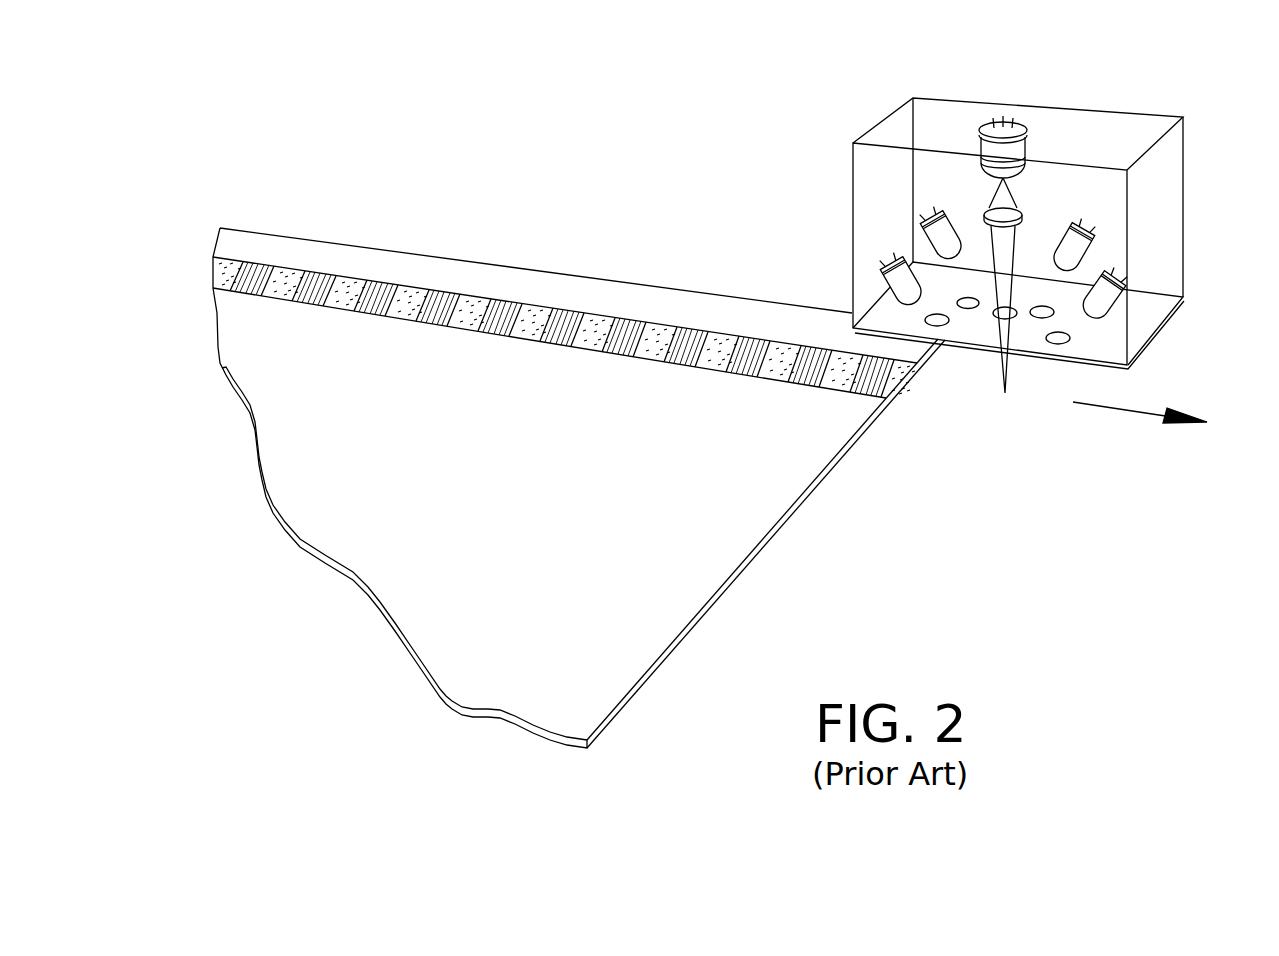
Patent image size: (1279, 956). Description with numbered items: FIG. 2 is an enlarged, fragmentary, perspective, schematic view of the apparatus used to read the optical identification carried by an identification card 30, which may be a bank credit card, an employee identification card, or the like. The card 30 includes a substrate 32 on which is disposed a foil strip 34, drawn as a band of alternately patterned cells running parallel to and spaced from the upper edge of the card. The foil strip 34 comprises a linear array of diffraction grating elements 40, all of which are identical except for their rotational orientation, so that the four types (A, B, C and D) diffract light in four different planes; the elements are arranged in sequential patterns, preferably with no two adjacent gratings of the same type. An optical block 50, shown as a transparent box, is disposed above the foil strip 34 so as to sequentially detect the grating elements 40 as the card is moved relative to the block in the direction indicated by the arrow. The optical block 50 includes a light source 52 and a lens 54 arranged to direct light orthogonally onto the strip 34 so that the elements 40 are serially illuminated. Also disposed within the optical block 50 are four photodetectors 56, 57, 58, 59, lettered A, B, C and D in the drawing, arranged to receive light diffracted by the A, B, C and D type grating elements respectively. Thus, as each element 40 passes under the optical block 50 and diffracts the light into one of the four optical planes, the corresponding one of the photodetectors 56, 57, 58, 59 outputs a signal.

The identification card 30 is at (579, 466).
The substrate 32 is at (635, 649).
The foil strip 34 is at (318, 280).
The diffraction grating elements 40 is at (737, 347).
The optical block 50 is at (895, 125).
The light source 52 is at (990, 122).
The lens 54 is at (1017, 212).
The photodetector 56 is at (1130, 297).
The photodetector 57 is at (1092, 241).
The photodetector 58 is at (922, 226).
The photodetector 59 is at (880, 274).